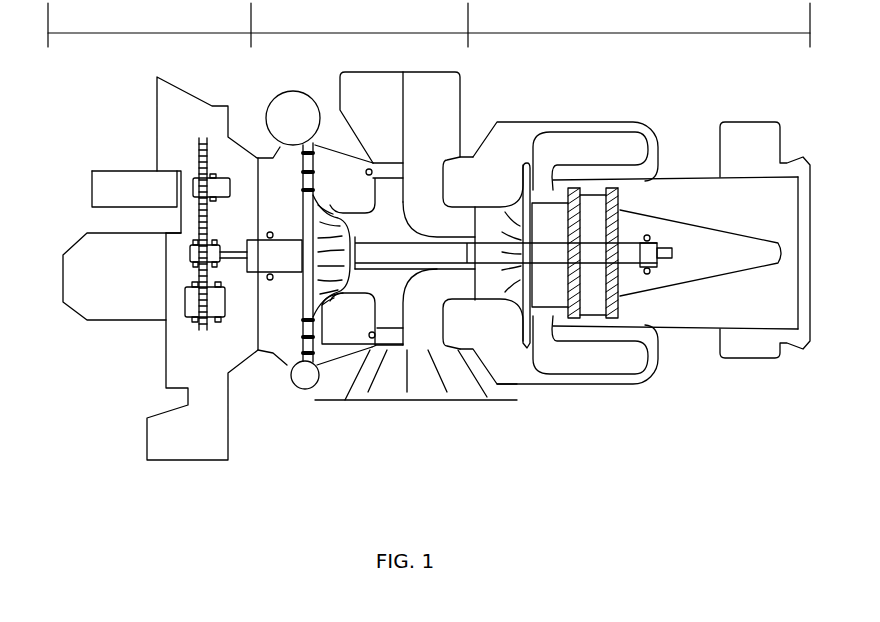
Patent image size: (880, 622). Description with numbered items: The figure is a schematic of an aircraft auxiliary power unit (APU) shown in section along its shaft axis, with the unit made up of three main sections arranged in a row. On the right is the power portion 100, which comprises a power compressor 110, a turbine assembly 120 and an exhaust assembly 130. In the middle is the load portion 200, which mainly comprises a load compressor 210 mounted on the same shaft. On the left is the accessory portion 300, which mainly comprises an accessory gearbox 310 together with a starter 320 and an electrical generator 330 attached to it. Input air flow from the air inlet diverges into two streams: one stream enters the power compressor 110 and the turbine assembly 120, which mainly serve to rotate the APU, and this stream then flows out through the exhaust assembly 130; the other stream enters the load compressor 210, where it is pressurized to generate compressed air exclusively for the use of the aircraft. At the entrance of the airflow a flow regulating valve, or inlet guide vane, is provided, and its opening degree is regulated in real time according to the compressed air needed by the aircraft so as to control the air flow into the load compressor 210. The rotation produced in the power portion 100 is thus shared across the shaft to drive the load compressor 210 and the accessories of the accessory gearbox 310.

The power portion 100 is at (641, 223).
The power compressor 110 is at (533, 373).
The turbine assembly 120 is at (620, 320).
The exhaust assembly 130 is at (758, 338).
The load portion 200 is at (452, 229).
The load compressor 210 is at (325, 340).
The accessory portion 300 is at (195, 238).
The accessory gearbox 310 is at (183, 368).
The starter 320 is at (83, 295).
The electrical generator 330 is at (90, 172).